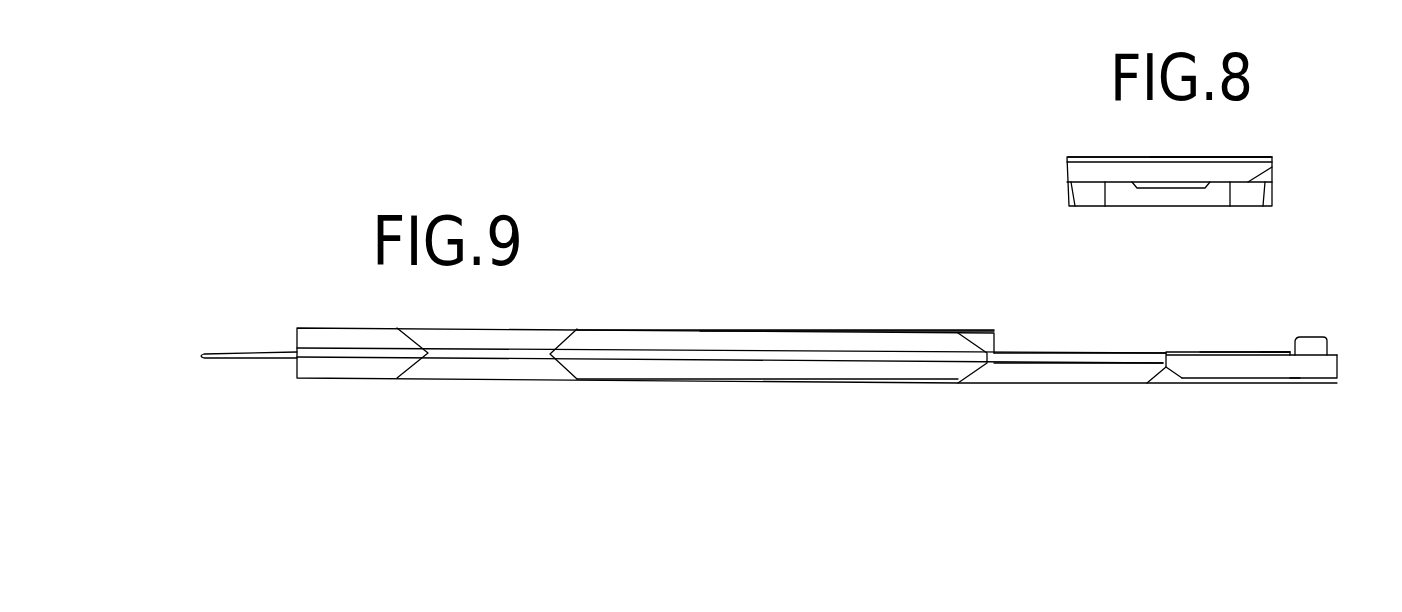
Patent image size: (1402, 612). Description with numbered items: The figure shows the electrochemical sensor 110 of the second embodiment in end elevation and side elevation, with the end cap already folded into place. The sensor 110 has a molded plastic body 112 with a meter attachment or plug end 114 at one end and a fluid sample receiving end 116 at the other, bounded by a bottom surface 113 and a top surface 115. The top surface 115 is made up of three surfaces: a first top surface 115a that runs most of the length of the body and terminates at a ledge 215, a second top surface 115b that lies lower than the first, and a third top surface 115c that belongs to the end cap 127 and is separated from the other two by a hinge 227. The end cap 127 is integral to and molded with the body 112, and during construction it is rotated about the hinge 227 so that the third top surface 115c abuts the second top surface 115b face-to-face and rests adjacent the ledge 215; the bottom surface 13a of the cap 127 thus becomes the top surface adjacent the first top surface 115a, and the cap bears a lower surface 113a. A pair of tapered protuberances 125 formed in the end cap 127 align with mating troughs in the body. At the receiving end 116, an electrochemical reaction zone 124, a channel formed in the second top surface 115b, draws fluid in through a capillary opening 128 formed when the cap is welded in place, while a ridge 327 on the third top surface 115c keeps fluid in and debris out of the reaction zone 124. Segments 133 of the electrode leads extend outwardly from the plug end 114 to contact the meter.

In FIG. 8, the sensor 110 is at (1084, 222).
In FIG. 9, the sensor 110 is at (1069, 287).
In FIG. 8, the molded plastic body 112 is at (1121, 192).
In FIG. 9, the molded plastic body 112 is at (598, 330).
In FIG. 9, the bottom surface 113 is at (641, 393).
In FIG. 9, the lower surface of proximal head 113a is at (1238, 392).
In FIG. 9, the plug end 114 is at (287, 378).
In FIG. 8, the top surface 115 is at (1093, 142).
In FIG. 9, the top surface 115 is at (646, 318).
In FIG. 8, the first top surface 115a is at (1130, 143).
In FIG. 9, the first top surface 115a is at (736, 318).
In FIG. 9, the second top surface 115b is at (1031, 346).
In FIG. 9, the third top surface 115c is at (1291, 337).
In FIG. 8, the fluid sample receiving end 116 is at (1225, 195).
In FIG. 9, the fluid sample receiving end 116 is at (1168, 337).
In FIG. 9, the electrochemical reaction zone 124 is at (1080, 373).
In FIG. 9, the tapered protuberances 125 is at (1313, 343).
In FIG. 9, the end cap 127 is at (1298, 370).
In FIG. 8, the capillary opening 128 is at (1175, 211).
In FIG. 9, the segments of the leads 133 is at (225, 357).
In FIG. 8, the bottom surface of the cap 13a is at (1221, 145).
In FIG. 9, the ledge 215 is at (1006, 333).
In FIG. 8, the hinge 227 is at (1257, 175).
In FIG. 9, the hinge 227 is at (1165, 383).
In FIG. 9, the ridge 327 is at (1241, 337).